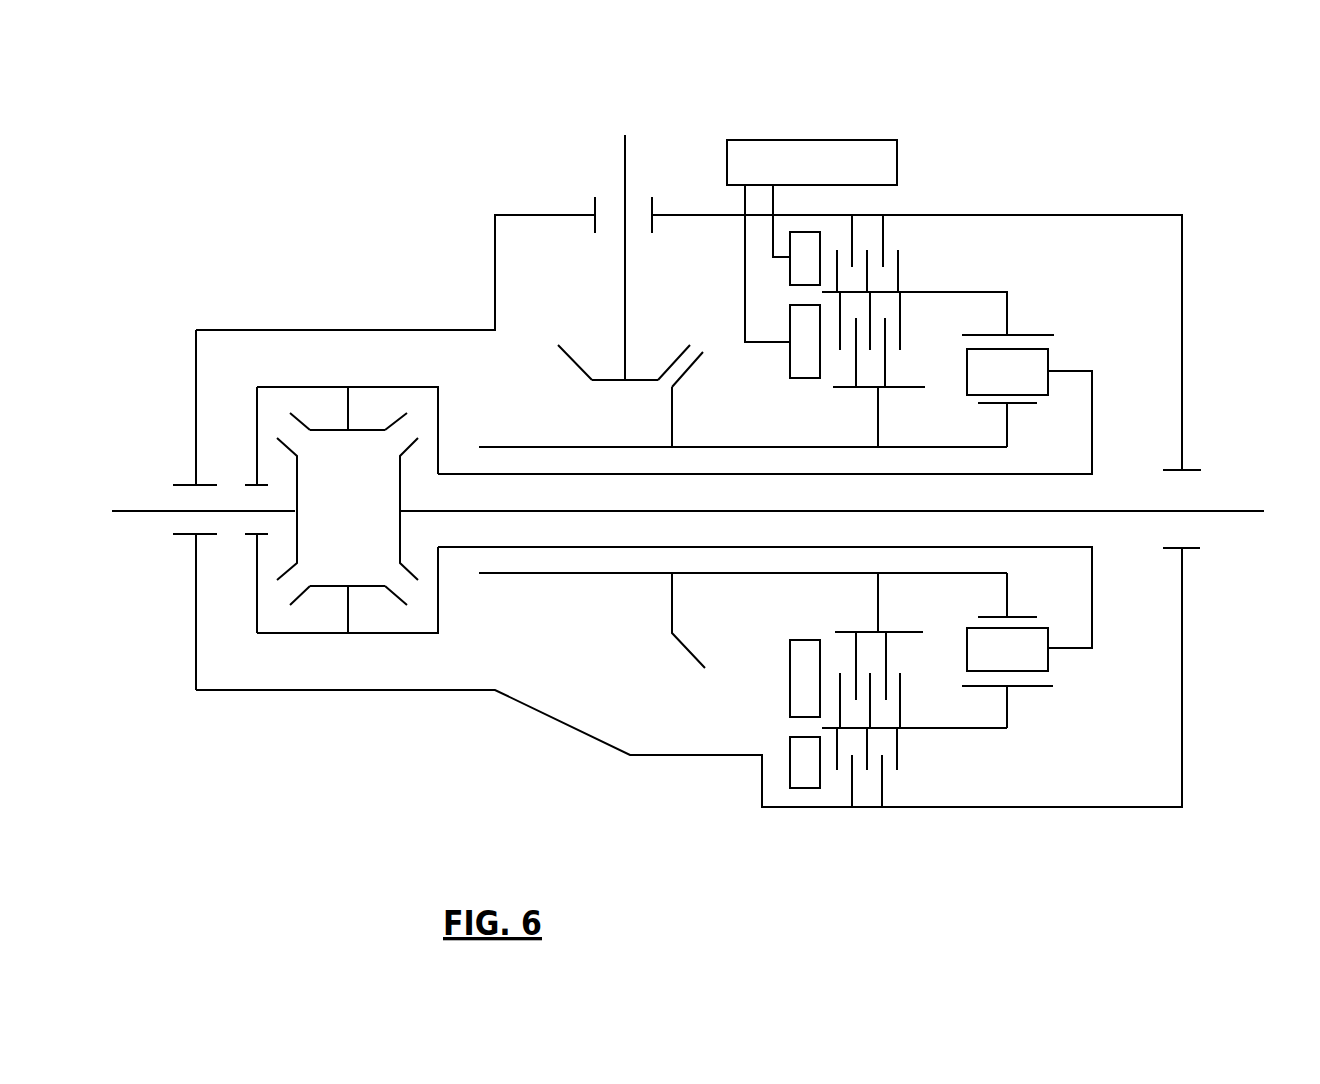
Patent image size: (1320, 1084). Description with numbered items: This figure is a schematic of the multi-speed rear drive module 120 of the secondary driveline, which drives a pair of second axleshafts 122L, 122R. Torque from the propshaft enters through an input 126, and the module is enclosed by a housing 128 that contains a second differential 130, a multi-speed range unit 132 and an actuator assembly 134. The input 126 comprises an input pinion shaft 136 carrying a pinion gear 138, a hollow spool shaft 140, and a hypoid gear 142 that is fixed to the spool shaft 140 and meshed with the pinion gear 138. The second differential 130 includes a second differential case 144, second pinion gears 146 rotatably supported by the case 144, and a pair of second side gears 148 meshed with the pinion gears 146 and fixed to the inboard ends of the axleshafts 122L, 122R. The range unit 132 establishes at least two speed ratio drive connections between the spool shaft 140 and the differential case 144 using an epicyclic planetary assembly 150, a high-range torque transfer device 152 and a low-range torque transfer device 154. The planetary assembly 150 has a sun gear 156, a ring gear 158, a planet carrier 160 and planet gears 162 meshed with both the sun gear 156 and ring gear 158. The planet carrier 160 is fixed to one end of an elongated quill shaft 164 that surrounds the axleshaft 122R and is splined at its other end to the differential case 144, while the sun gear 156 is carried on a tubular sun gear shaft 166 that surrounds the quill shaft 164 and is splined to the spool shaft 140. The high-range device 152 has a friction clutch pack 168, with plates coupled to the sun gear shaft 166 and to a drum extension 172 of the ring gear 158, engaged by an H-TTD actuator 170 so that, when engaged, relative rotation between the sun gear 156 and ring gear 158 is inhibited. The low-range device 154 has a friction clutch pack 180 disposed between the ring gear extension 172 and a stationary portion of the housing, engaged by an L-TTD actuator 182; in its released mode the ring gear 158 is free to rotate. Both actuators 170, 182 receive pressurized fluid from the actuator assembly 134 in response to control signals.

The multi-speed rear drive module 120 is at (1250, 177).
The second axleshaft 122L is at (150, 510).
The second axleshaft 122R is at (1222, 510).
The input 126 is at (528, 289).
The housing 128 is at (1182, 308).
The second differential 130 is at (252, 642).
The multi-speed range unit 132 is at (995, 250).
The actuator assembly 134 is at (903, 152).
The input pinion shaft 136 is at (623, 177).
The pinion gear 138 is at (573, 365).
The hollow spool shaft 140 is at (537, 573).
The hypoid gear 142 is at (683, 650).
The second differential case 144 is at (372, 633).
The second pinion gears 146 is at (348, 610).
The second side gears 148 is at (297, 485).
The epicyclic planetary assembly 150 is at (1078, 318).
The high-range torque transfer device 152 is at (790, 392).
The low-range torque transfer device 154 is at (778, 751).
The sun gear 156 is at (1007, 427).
The ring gear 158 is at (1007, 705).
The planet carrier 160 is at (1092, 605).
The planet gears 162 is at (1007, 372).
The quill shaft 164 is at (462, 547).
The sun gear shaft 166 is at (777, 573).
The friction clutch pack 168 is at (900, 312).
The H-TTD actuator 170 is at (790, 668).
The drum extension 172 is at (973, 728).
The friction clutch pack 180 is at (868, 272).
The L-TTD actuator 182 is at (803, 788).